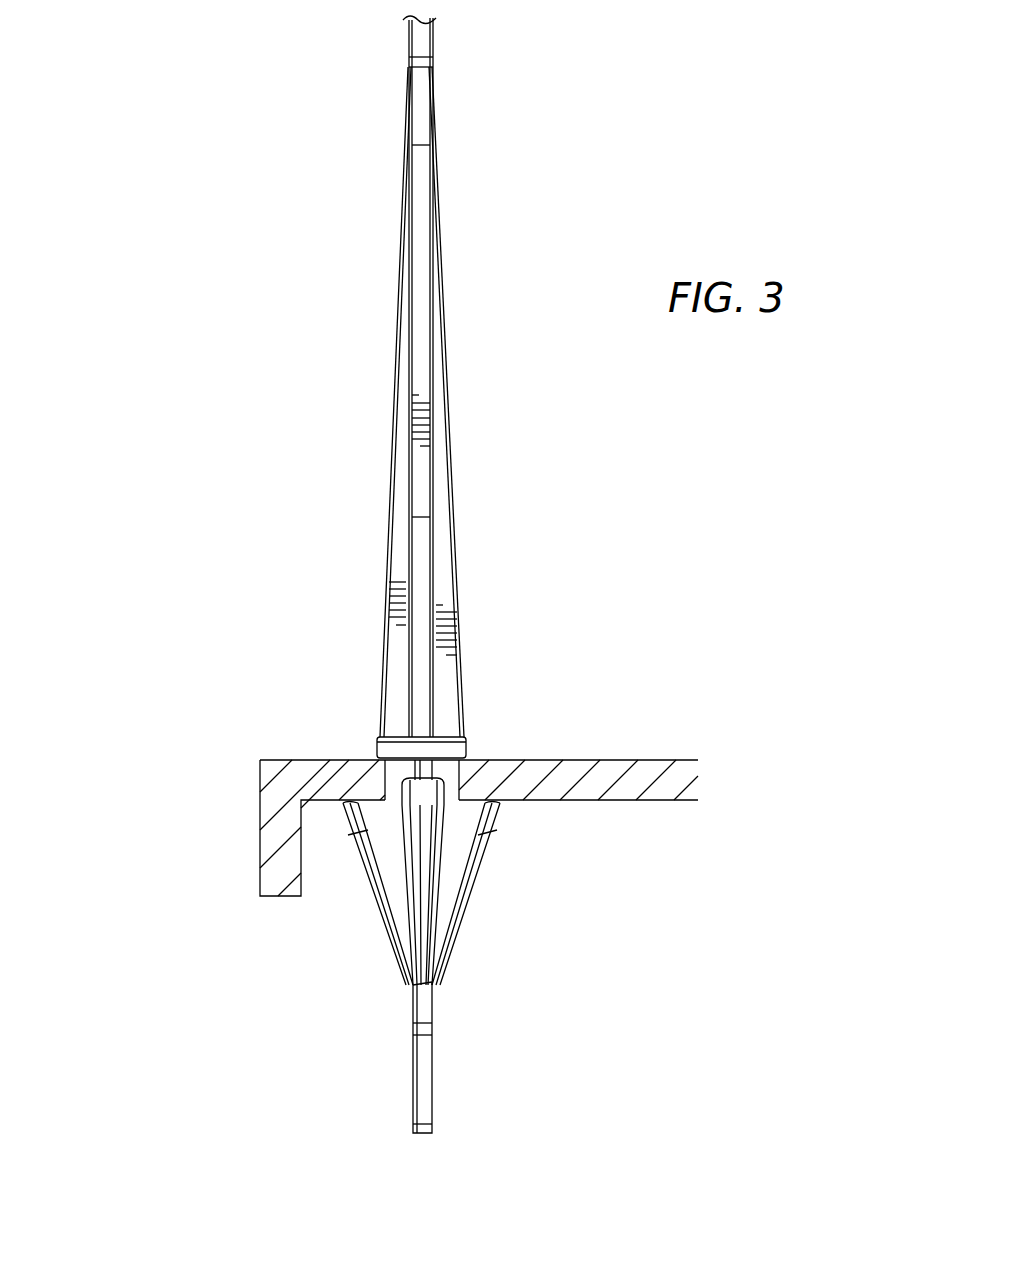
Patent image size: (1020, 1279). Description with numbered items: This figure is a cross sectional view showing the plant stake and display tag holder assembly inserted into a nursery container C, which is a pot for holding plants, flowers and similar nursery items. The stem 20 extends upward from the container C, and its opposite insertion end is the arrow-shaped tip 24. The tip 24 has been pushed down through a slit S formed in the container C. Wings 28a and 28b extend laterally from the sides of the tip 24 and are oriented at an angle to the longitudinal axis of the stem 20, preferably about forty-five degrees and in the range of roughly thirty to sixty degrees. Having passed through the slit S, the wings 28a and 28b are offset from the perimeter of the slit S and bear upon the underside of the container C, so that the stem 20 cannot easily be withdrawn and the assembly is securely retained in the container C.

The stem 20 is at (372, 312).
The nursery container C is at (260, 850).
The slit S is at (458, 770).
The tip 24 is at (423, 1133).
The wing 28a is at (370, 880).
The wing 28b is at (485, 870).